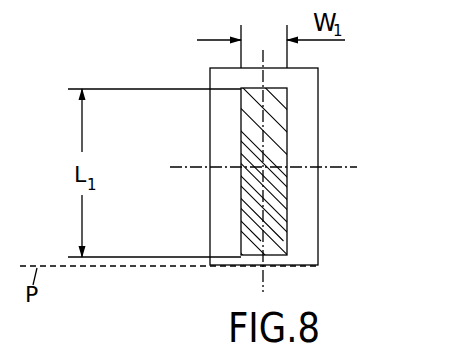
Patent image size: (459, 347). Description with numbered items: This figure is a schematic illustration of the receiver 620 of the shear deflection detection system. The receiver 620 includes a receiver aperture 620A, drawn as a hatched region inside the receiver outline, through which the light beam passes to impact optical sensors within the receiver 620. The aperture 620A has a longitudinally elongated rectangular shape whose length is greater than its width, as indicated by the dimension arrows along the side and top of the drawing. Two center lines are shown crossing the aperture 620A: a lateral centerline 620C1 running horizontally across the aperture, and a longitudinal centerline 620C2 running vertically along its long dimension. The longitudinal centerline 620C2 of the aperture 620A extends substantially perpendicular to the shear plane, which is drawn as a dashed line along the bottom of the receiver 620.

The receiver 620 is at (210, 215).
The receiver aperture 620A is at (289, 107).
The lateral centerline 620C1 is at (338, 169).
The longitudinal centerline 620C2 is at (266, 287).